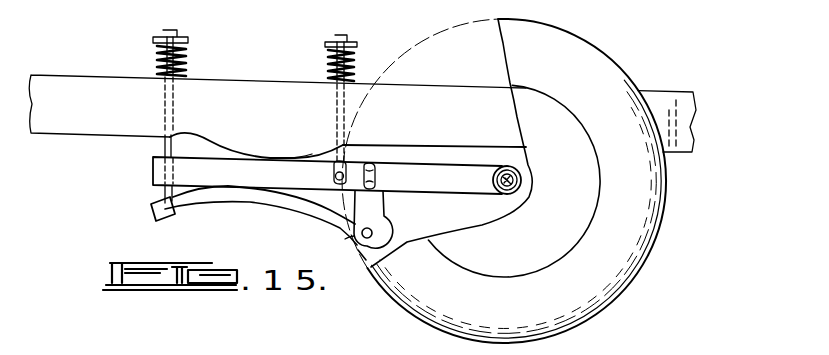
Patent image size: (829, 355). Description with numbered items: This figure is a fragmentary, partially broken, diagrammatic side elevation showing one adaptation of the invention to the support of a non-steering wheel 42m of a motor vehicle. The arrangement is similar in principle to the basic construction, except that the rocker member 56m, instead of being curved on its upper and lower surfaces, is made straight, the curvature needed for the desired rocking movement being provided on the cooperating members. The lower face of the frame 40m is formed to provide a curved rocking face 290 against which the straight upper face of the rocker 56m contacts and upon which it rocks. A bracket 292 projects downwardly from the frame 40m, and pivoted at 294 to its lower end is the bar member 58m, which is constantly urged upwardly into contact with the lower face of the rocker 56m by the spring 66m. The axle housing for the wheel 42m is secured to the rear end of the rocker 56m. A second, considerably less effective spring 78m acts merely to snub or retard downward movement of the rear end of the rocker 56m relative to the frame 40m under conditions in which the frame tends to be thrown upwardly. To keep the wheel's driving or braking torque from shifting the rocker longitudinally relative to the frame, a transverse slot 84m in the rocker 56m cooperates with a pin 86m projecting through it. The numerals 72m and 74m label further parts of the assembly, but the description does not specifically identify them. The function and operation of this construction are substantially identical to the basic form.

The frame 40m is at (677, 93).
The wheel 42m is at (650, 257).
The spring 66m is at (192, 57).
The spring 78m is at (350, 55).
The curved rocking face 290 is at (204, 146).
The bolt 72m is at (292, 156).
The transverse slot 84m is at (378, 163).
The rocker member 56m is at (337, 175).
The pin 86m is at (377, 177).
The bracket 292 is at (383, 207).
The pivot 294 is at (345, 245).
The bar member 58m is at (225, 187).
The nut 74m is at (220, 195).